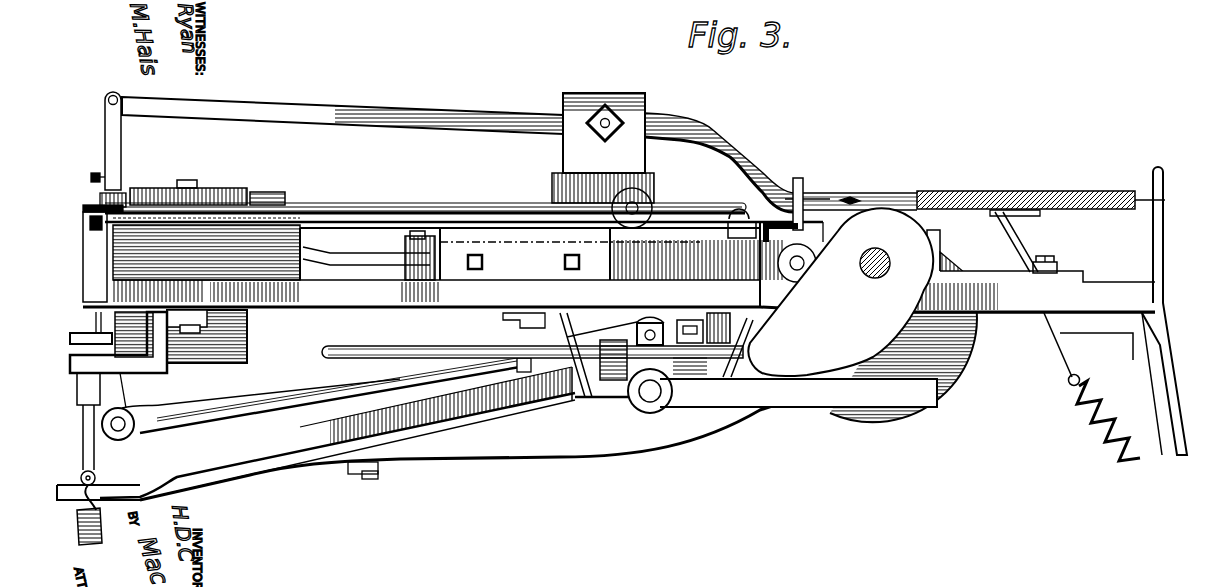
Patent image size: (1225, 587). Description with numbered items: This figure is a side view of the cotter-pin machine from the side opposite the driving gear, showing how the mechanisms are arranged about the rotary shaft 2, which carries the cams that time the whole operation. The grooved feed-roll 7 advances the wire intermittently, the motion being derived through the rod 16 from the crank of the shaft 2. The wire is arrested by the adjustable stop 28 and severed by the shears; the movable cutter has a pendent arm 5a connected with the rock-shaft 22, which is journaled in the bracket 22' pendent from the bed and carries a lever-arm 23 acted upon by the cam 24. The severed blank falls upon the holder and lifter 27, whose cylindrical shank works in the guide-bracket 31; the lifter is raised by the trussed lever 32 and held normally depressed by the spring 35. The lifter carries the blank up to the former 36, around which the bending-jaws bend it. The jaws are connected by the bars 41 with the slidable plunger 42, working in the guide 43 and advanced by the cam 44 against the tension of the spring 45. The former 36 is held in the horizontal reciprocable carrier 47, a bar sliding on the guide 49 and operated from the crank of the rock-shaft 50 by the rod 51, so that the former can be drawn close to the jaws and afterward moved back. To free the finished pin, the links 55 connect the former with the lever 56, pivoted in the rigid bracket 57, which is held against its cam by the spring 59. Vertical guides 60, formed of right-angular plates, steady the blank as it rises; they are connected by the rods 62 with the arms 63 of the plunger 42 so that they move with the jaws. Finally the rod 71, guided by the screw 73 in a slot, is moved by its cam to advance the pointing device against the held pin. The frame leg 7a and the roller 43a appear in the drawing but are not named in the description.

The rotary shaft 2 is at (876, 278).
The pendent arm 5a is at (118, 396).
The feed-roll 7 is at (606, 361).
The frame leg 7a is at (1178, 411).
The rod 16 is at (295, 396).
The rock-shaft 22 is at (636, 372).
The bracket 22' is at (592, 366).
The lever-arm 23 is at (782, 391).
The cam 24 is at (790, 328).
The holder and lifter 27 is at (75, 350).
The stop 28 is at (98, 318).
The guide-bracket 31 is at (248, 356).
The trussed lever 32 is at (337, 433).
The spring 35 is at (77, 522).
The former 36 is at (96, 189).
The bars 41 is at (360, 254).
The slidable plunger 42 is at (433, 290).
The guide 43 is at (436, 264).
The roller 43a is at (776, 262).
The cam 44 is at (968, 372).
The spring 45 is at (1013, 194).
The horizontal reciprocable carrier 47 is at (131, 195).
The guide 49 is at (233, 192).
The rock-shaft 50 is at (640, 203).
The rod 51 is at (472, 206).
The links 55 is at (119, 165).
The lever 56 is at (458, 112).
The rigid bracket 57 is at (603, 148).
The spring 59 is at (1070, 398).
The vertical guides 60 is at (93, 274).
The rods 62 is at (368, 213).
The arms 63 is at (727, 233).
The rod 71 is at (476, 348).
The guide-screw 73 is at (1056, 262).